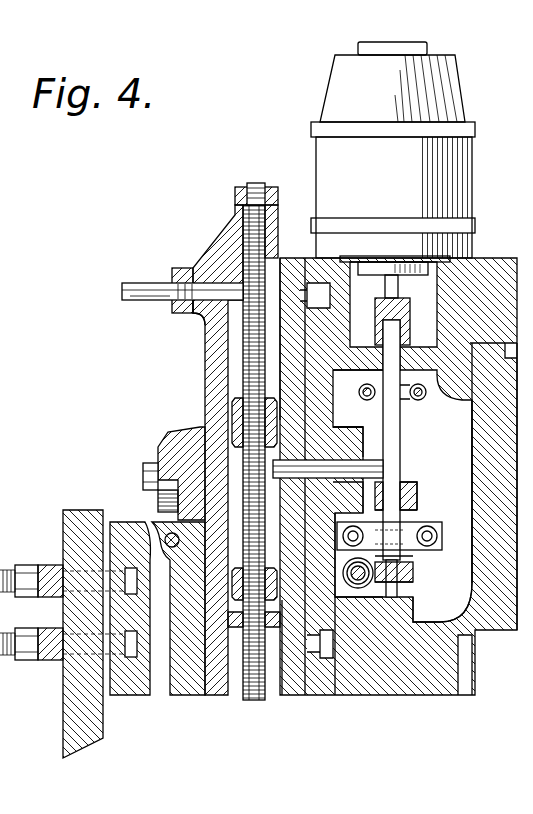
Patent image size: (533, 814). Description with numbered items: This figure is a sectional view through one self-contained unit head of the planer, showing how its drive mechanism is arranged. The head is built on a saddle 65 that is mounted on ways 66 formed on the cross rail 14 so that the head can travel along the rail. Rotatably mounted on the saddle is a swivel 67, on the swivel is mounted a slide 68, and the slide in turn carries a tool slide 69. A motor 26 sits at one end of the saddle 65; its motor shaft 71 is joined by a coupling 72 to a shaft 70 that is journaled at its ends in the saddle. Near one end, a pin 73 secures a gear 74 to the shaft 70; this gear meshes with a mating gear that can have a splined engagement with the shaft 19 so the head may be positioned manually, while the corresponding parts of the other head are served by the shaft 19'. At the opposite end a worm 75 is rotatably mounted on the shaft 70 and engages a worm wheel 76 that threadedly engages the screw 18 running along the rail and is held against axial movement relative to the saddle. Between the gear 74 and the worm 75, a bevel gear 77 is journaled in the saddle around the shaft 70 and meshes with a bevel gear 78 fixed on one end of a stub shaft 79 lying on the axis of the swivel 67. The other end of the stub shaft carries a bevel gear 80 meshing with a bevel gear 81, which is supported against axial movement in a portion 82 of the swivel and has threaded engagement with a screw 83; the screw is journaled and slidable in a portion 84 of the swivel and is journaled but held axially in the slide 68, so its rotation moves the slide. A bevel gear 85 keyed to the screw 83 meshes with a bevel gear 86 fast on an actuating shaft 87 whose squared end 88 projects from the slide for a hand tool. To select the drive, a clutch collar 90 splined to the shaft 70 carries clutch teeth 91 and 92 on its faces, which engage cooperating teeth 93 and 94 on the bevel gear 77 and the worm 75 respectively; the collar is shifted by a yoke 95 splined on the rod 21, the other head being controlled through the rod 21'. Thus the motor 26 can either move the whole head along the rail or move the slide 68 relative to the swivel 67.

The cross rail 14 is at (492, 447).
The screw 18 is at (395, 605).
The shaft 19 is at (356, 383).
The shaft 19' is at (424, 382).
The rod 21 is at (351, 529).
The rod 21' is at (446, 528).
The motor 26 is at (393, 152).
The saddle 65 is at (366, 695).
The ways 66 is at (480, 486).
The swivel 67 is at (292, 695).
The slide 68 is at (222, 238).
The tool slide 69 is at (178, 695).
The shaft 70 is at (400, 446).
The motor shaft 71 is at (398, 288).
The coupling 72 is at (410, 330).
The pin 73 is at (408, 368).
The gear 74 is at (412, 398).
The worm 75 is at (414, 582).
The worm wheel 76 is at (348, 585).
The bevel gear 77 is at (409, 483).
The bevel gear 78 is at (365, 440).
The stub shaft 79 is at (358, 398).
The bevel gear 80 is at (328, 484).
The bevel gear 81 is at (200, 447).
The portion of the swivel 82 is at (232, 412).
The screw 83 is at (243, 365).
The portion of the swivel 84 is at (232, 588).
The bevel gear 85 is at (282, 258).
The bevel gear 86 is at (223, 316).
The actuating shaft 87 is at (197, 264).
The squared end 88 is at (130, 283).
The clutch collar 90 is at (425, 547).
The clutch teeth 91 is at (405, 512).
The clutch teeth 92 is at (413, 557).
The cooperating teeth 93 is at (418, 495).
The cooperating teeth 94 is at (414, 572).
The yoke 95 is at (348, 497).